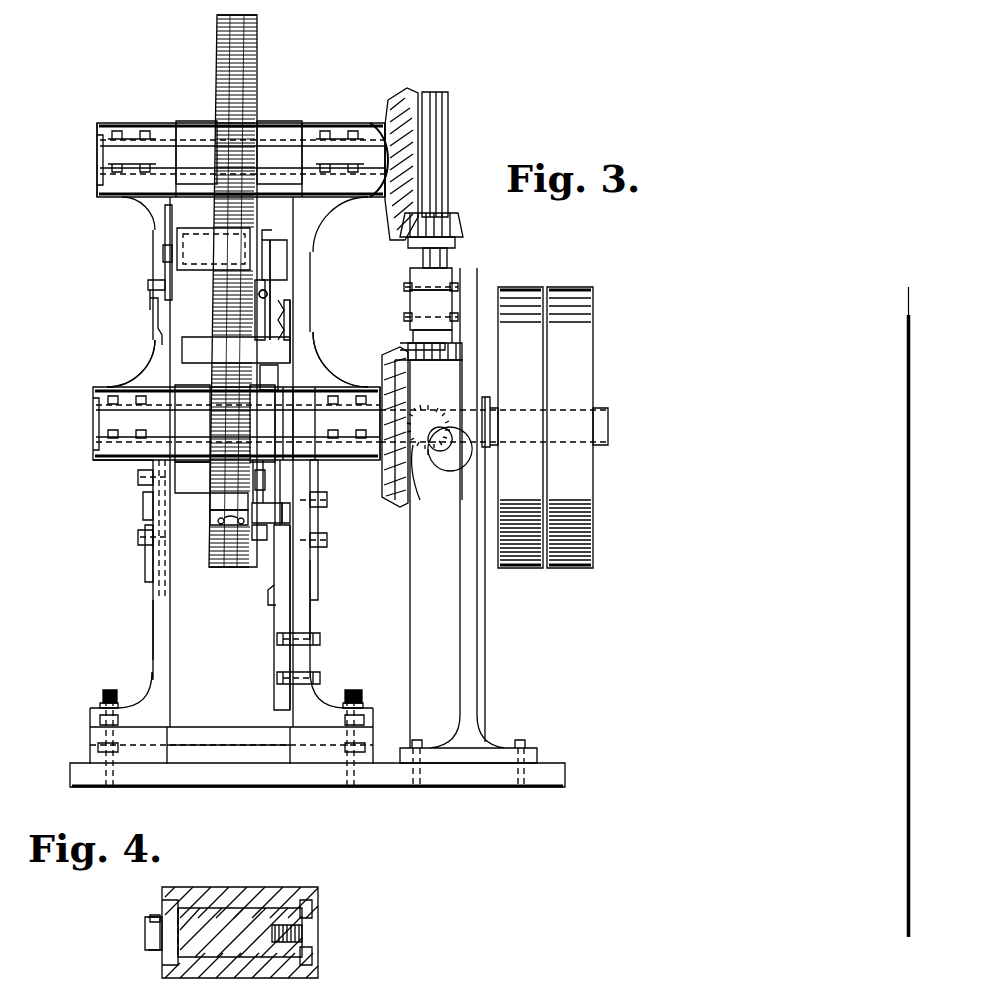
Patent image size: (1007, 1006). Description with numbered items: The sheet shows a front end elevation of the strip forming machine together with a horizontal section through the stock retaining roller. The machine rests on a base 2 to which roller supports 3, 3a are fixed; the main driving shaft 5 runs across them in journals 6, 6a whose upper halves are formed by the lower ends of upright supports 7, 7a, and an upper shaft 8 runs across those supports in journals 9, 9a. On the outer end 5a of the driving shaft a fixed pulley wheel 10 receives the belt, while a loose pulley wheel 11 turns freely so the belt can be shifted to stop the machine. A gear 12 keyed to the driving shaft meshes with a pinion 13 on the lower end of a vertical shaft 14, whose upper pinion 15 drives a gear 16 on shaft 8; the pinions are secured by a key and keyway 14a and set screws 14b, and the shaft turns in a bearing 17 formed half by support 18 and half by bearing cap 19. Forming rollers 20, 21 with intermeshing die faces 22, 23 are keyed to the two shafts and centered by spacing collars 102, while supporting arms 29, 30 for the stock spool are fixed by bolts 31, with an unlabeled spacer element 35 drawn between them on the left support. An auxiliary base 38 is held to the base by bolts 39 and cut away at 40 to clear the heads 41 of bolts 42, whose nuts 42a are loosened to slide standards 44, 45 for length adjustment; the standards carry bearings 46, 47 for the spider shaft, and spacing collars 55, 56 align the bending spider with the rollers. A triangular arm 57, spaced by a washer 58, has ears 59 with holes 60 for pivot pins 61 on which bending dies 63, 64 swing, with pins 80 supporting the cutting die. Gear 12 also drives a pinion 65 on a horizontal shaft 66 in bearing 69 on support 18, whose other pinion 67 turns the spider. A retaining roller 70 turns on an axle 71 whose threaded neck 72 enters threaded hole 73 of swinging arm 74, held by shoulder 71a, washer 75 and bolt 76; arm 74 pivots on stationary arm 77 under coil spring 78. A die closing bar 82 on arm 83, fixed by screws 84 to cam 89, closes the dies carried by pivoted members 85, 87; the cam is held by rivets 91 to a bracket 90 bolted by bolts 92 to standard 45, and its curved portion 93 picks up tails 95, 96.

In FIG. 3, the base 2 is at (317, 775).
In FIG. 3, the roller support 3 is at (153, 642).
In FIG. 3, the roller support 3a is at (318, 590).
In FIG. 3, the main driving shaft 5 is at (93, 422).
In FIG. 3, the outer end of driving shaft 5a is at (606, 408).
In FIG. 3, the journal 6 is at (110, 460).
In FIG. 3, the journal 6a is at (350, 460).
In FIG. 3, the upright support 7 is at (163, 253).
In FIG. 3, the upright support 7a is at (272, 272).
In FIG. 3, the shaft 8 is at (97, 156).
In FIG. 3, the journal 9 is at (112, 123).
In FIG. 3, the journal 9a is at (322, 123).
In FIG. 3, the pulley wheel 10 is at (512, 427).
In FIG. 3, the pulley wheel 11 is at (570, 427).
In FIG. 3, the gear 12 is at (386, 482).
In FIG. 3, the pinion 13 is at (428, 430).
In FIG. 3, the shaft 14 is at (447, 256).
In FIG. 3, the key and keyway 14a is at (436, 160).
In FIG. 3, the set screws 14b is at (455, 244).
In FIG. 3, the pinion 15 is at (460, 228).
In FIG. 3, the gear 16 is at (408, 90).
In FIG. 3, the bearing 17 is at (410, 300).
In FIG. 3, the support 18 is at (462, 552).
In FIG. 3, the bearing cap 19 is at (410, 276).
In FIG. 3, the strip forming roller 20 is at (210, 482).
In FIG. 3, the strip forming roller 21 is at (217, 90).
In FIG. 3, the die face 22 is at (209, 546).
In FIG. 3, the die face 23 is at (228, 58).
In FIG. 3, the supporting arm 29 is at (145, 570).
In FIG. 3, the supporting arm 30 is at (318, 564).
In FIG. 3, the bolts 31 is at (138, 478).
In FIG. 3, the spacer 35 is at (143, 517).
In FIG. 3, the auxiliary base 38 is at (231, 738).
In FIG. 3, the bolts 39 is at (100, 718).
In FIG. 3, the cut away portion 40 is at (98, 747).
In FIG. 3, the bolt heads 41 is at (113, 758).
In FIG. 3, the bolts 42 is at (108, 690).
In FIG. 3, the nuts 42a is at (375, 694).
In FIG. 3, the standard 44 is at (153, 612).
In FIG. 3, the standard 45 is at (312, 604).
In FIG. 3, the bearing 46 is at (112, 380).
In FIG. 3, the bearing 47 is at (358, 386).
In FIG. 3, the spacing collar 55 is at (192, 423).
In FIG. 3, the spacing collar 56 is at (262, 423).
In FIG. 3, the triangular arm 57 is at (268, 377).
In FIG. 3, the washer 58 is at (262, 471).
In FIG. 3, the ears 59 is at (272, 262).
In FIG. 3, the holes 60 is at (266, 288).
In FIG. 3, the pivot pins 61 is at (270, 292).
In FIG. 3, the bending die 63 is at (229, 502).
In FIG. 3, the bending die 64 is at (274, 260).
In FIG. 3, the pinion 65 is at (440, 392).
In FIG. 3, the horizontal shaft 66 is at (439, 438).
In FIG. 3, the pinion 67 is at (428, 450).
In FIG. 3, the bearing 69 is at (413, 455).
In FIG. 3, the retaining roller 70 is at (213, 249).
In FIG. 3, the swinging arm 74 is at (165, 236).
In FIG. 4, the swinging arm 74 is at (152, 915).
In FIG. 3, the stationary arm 77 is at (150, 325).
In FIG. 3, the coil spring 78 is at (148, 284).
In FIG. 3, the pins 80 is at (218, 518).
In FIG. 3, the die closing bar 82 is at (236, 350).
In FIG. 3, the arm 83 is at (292, 366).
In FIG. 3, the screws 84 is at (282, 412).
In FIG. 3, the pivoted member 85 is at (267, 521).
In FIG. 3, the pivoted member 87 is at (268, 238).
In FIG. 3, the cam 89 is at (272, 598).
In FIG. 3, the bracket 90 is at (290, 620).
In FIG. 3, the rivets or bolts 91 is at (274, 560).
In FIG. 3, the bolts 92 is at (320, 638).
In FIG. 3, the inwardly curved portion 93 is at (290, 330).
In FIG. 3, the tail 95 is at (290, 514).
In FIG. 3, the tail 96 is at (284, 318).
In FIG. 3, the spacing collars 102 is at (239, 152).
In FIG. 4, the axle 71 is at (240, 932).
In FIG. 4, the shoulder 71a is at (180, 890).
In FIG. 4, the threaded neck 72 is at (145, 940).
In FIG. 4, the threaded hole 73 is at (145, 924).
In FIG. 4, the washer 75 is at (312, 910).
In FIG. 4, the bolt 76 is at (302, 934).